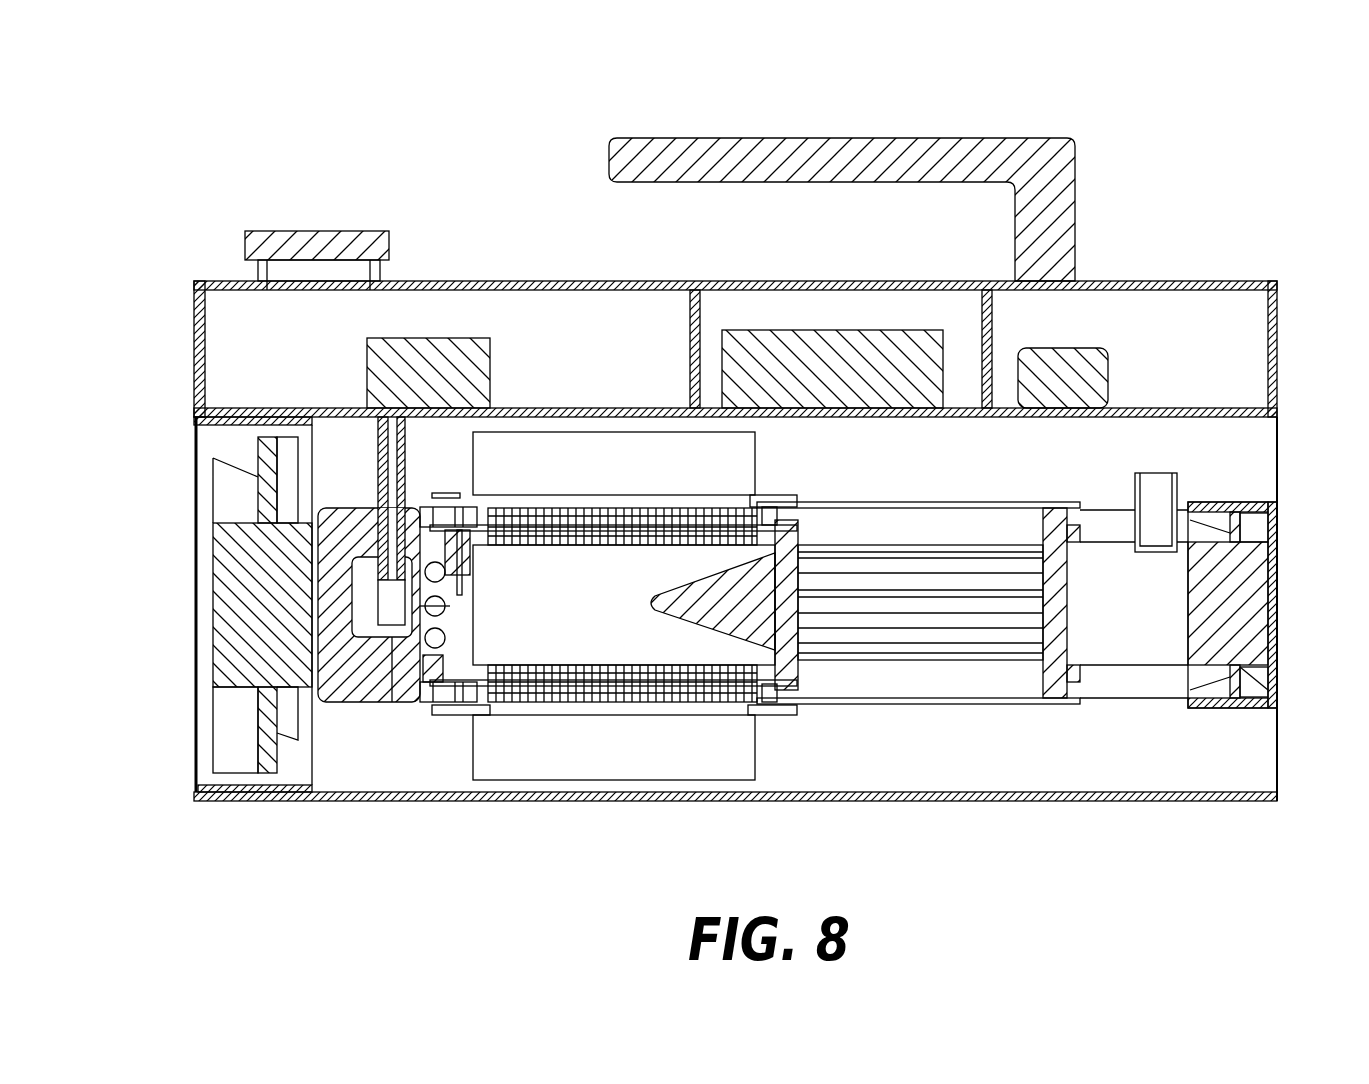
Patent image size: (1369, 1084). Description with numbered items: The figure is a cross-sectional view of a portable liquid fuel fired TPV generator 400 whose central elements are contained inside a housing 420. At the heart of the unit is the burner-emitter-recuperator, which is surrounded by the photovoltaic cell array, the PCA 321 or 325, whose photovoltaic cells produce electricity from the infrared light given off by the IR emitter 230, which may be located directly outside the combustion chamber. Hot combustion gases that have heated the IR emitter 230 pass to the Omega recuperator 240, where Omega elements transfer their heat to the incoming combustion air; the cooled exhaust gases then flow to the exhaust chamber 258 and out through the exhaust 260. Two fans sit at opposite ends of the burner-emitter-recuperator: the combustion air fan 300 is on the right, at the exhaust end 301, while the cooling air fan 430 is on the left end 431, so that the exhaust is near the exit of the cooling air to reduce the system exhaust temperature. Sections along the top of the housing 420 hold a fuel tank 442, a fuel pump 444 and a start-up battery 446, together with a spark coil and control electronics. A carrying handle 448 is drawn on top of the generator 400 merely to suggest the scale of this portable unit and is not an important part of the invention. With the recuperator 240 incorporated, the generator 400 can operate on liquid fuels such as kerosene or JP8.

The portable liquid fuel TPV generator 400 is at (735, 490).
The housing 420 is at (423, 802).
The fuel tank 442 is at (548, 283).
The fuel pump 444 is at (423, 338).
The start-up battery 446 is at (780, 330).
The carrying handle 448 is at (797, 138).
The cooling air fan 430 is at (215, 732).
The left end 431 is at (193, 638).
The PCA 321 is at (608, 460).
The PCA 325 is at (580, 470).
The IR emitter 230 is at (625, 540).
The Omega recuperator 240 is at (928, 660).
The exhaust chamber 258 is at (1143, 677).
The exhaust 260 is at (1155, 462).
The combustion air fan 300 is at (1277, 640).
The exhaust end 301 is at (1277, 473).